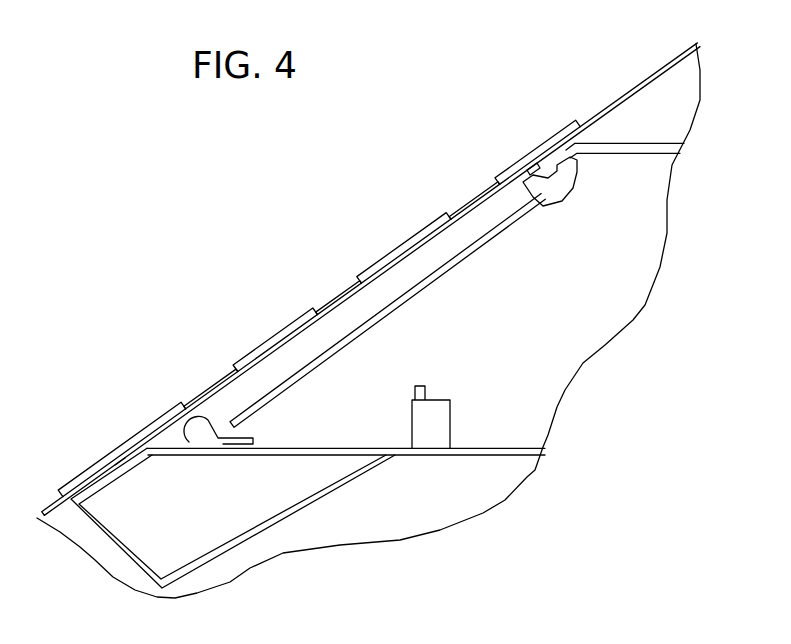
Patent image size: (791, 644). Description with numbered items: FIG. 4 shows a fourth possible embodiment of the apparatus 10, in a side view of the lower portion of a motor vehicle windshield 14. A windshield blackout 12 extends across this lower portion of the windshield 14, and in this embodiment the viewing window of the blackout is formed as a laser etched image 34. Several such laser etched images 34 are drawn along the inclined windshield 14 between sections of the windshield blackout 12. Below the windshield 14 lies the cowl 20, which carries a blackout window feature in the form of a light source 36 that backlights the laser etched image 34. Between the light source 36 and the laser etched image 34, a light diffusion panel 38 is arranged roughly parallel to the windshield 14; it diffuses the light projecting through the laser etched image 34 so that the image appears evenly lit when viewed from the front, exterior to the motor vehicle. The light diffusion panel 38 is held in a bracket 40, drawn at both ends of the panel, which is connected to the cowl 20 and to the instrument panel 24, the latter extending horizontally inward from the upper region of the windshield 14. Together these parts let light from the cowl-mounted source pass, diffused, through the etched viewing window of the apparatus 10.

The apparatus 10 is at (170, 233).
The windshield blackout 12 is at (520, 149).
The windshield 14 is at (617, 95).
The cowl 20 is at (275, 452).
The instrument panel 24 is at (630, 150).
The laser etched image 34 is at (200, 390).
The light source 36 is at (437, 415).
The light diffusion panel 38 is at (453, 262).
The bracket 40 is at (557, 198).